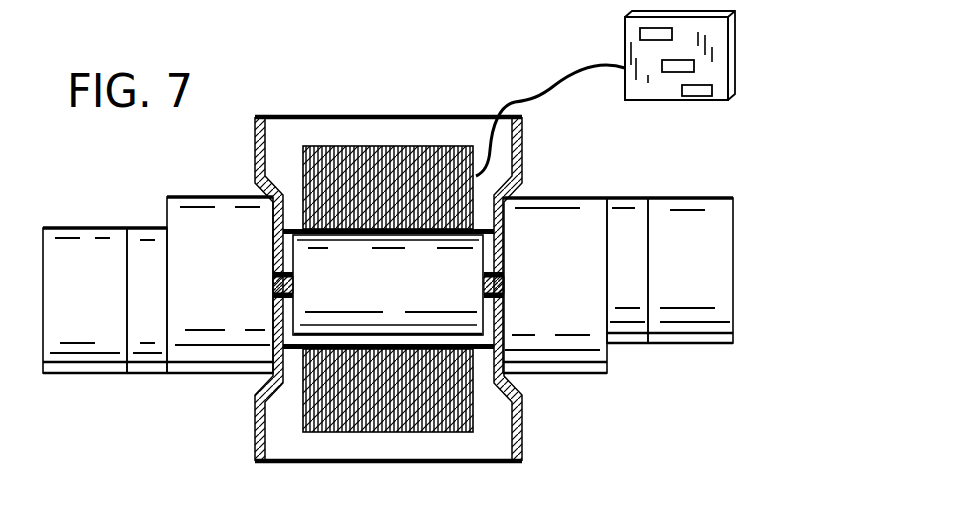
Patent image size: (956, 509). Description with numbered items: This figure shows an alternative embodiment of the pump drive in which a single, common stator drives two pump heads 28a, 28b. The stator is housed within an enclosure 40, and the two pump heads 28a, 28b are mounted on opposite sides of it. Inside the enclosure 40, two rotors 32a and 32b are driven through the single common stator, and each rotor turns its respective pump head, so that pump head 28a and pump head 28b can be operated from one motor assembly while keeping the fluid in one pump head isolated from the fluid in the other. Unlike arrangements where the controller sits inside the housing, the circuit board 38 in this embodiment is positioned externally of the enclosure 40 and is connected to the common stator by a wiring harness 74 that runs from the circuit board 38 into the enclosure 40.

The enclosure 40 is at (350, 116).
The pump head 28a is at (78, 227).
The pump head 28b is at (703, 344).
The rotor 32a is at (275, 267).
The rotor 32b is at (503, 270).
The wiring harness 74 is at (556, 88).
The circuit board 38 is at (688, 103).